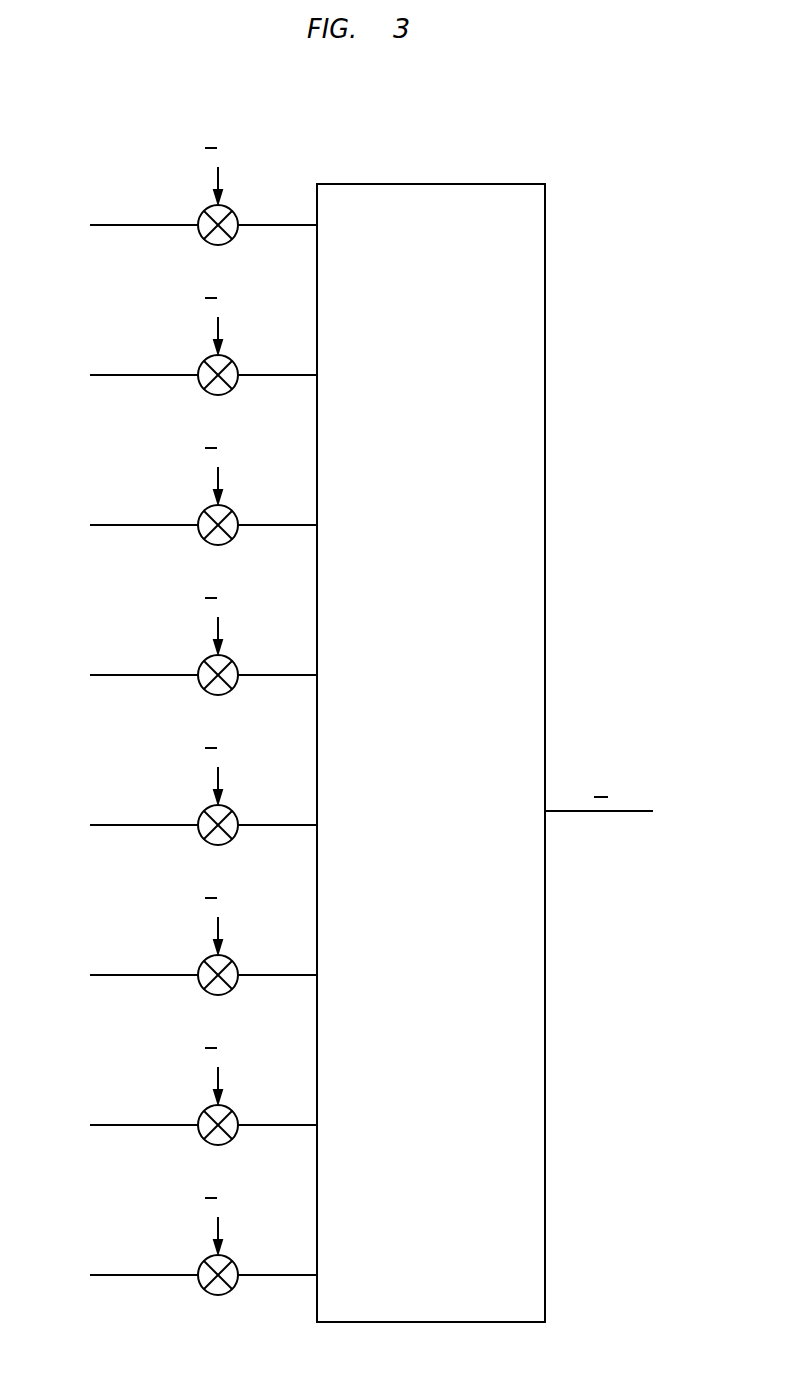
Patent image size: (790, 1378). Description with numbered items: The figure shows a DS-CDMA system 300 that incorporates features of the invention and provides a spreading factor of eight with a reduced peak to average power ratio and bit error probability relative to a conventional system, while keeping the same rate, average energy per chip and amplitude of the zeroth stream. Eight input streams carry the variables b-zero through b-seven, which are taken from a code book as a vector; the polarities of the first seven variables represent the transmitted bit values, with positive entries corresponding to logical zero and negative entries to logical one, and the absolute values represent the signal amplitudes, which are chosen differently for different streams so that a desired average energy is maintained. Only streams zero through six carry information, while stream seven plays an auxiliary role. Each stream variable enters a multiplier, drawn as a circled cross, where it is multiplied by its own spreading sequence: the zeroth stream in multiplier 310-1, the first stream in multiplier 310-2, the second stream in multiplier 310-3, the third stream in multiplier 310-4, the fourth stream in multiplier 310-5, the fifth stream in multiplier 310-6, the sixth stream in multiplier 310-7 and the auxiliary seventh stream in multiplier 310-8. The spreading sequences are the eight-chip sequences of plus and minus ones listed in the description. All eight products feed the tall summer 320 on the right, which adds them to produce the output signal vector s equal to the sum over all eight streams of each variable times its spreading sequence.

The DS-CDMA system 300 is at (682, 166).
The multiplier 310-1 is at (200, 213).
The multiplier 310-2 is at (200, 363).
The multiplier 310-3 is at (200, 513).
The multiplier 310-4 is at (200, 663).
The multiplier 310-5 is at (200, 813).
The multiplier 310-6 is at (200, 963).
The multiplier 310-7 is at (200, 1113).
The multiplier 310-8 is at (200, 1263).
The summer 320 is at (453, 857).